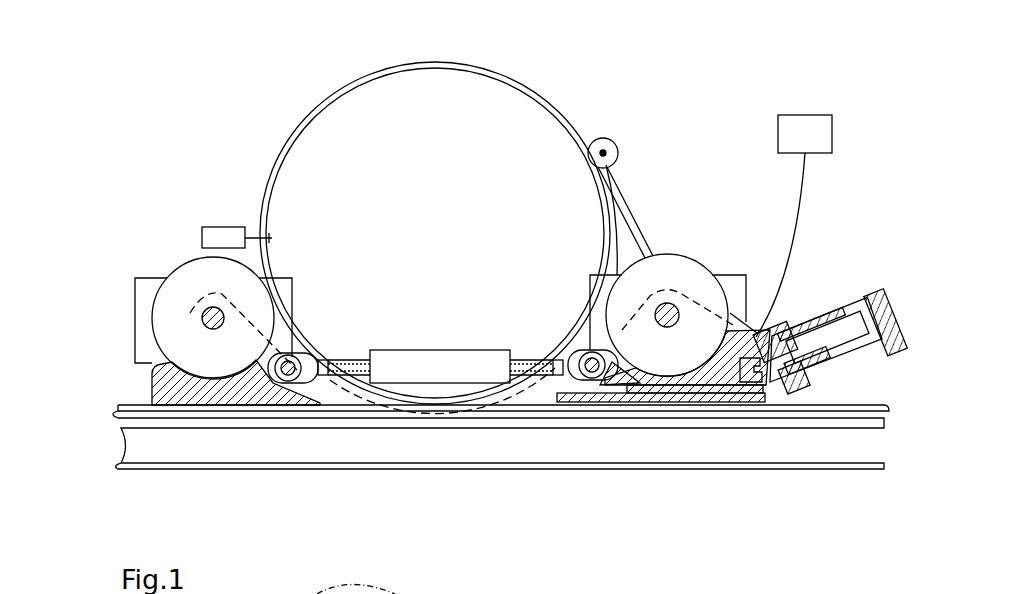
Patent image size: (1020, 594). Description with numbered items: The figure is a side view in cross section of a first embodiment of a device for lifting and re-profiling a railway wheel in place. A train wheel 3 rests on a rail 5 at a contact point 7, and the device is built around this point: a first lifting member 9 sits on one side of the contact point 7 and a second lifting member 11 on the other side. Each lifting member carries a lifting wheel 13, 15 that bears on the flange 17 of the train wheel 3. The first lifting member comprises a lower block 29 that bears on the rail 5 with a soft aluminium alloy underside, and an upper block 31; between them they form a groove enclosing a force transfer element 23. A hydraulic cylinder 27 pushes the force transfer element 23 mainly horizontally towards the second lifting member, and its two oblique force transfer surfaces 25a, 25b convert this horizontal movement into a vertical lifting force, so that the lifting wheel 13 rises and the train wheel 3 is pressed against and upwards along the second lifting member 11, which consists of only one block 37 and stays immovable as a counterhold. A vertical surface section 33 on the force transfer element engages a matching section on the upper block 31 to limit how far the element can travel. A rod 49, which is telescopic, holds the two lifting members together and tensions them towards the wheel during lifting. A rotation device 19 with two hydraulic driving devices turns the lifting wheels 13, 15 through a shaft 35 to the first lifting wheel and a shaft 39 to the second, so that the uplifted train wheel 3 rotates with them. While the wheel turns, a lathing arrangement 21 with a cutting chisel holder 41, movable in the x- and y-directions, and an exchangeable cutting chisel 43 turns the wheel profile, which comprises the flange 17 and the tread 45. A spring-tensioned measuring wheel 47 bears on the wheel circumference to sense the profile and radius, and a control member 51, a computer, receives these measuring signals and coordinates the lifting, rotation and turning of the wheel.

The train wheel 3 is at (323, 160).
The rail 5 is at (502, 443).
The contact point 7 is at (438, 405).
The first lifting member 9 is at (702, 328).
The second lifting member 11 is at (162, 388).
The lifting wheel 13 is at (673, 270).
The lifting wheel 15 is at (162, 310).
The flange 17 is at (352, 88).
The rotation device 19 is at (155, 285).
The lathing arrangement 21 is at (217, 230).
The force transfer element 23 is at (720, 396).
The first oblique force transfer surface 25a is at (605, 387).
The second oblique force transfer surface 25b is at (748, 372).
The hydraulic cylinder 27 is at (843, 337).
The lower block 29 is at (647, 387).
The upper block 31 is at (773, 333).
The vertical surface section 33 is at (638, 360).
The shaft 35 is at (671, 298).
The block 37 is at (248, 390).
The shaft 39 is at (217, 330).
The cutting chisel holder 41 is at (203, 240).
The cutting chisel 43 is at (262, 235).
The tread 45 is at (524, 86).
The measuring wheel 47 is at (612, 153).
The rod 49 is at (415, 380).
The control member 51 is at (810, 120).